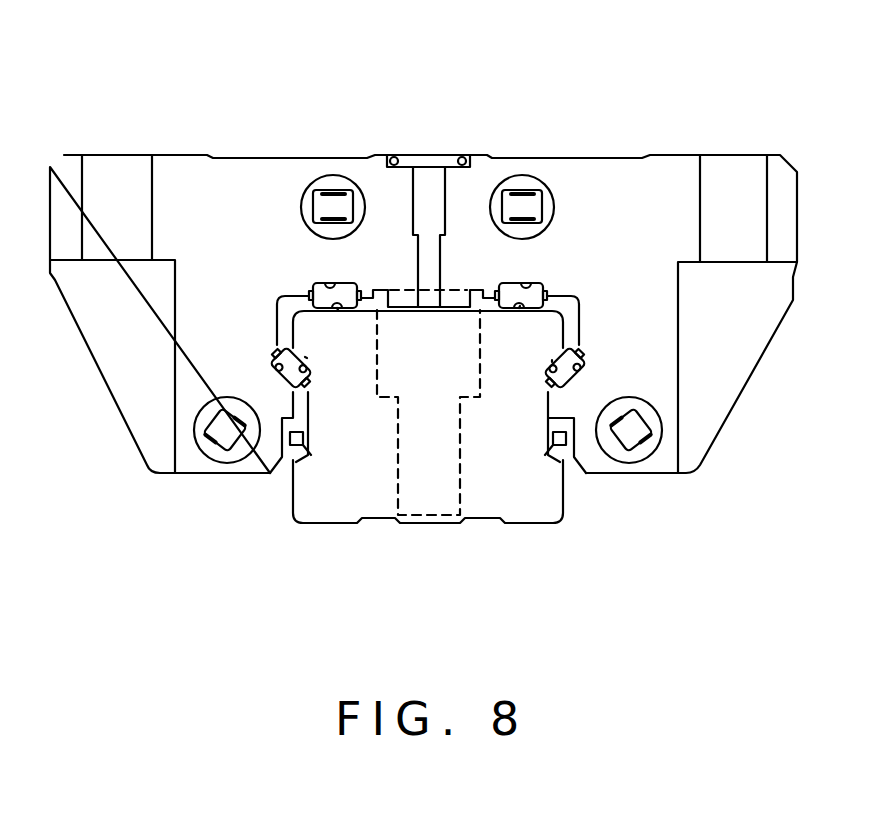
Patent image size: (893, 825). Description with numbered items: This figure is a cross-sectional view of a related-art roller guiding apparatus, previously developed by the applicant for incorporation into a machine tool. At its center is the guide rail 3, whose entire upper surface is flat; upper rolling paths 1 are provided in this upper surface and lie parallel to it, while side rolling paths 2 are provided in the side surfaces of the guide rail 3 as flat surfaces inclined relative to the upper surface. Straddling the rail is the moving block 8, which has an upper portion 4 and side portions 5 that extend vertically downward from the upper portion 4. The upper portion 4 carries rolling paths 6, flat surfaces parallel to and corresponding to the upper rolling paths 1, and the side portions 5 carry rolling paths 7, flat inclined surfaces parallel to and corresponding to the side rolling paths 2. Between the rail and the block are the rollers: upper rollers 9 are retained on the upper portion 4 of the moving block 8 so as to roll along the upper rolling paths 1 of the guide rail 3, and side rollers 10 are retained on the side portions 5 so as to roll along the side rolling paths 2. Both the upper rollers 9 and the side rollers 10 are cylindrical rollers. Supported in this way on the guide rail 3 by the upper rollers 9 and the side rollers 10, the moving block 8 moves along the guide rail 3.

The upper rolling paths 1 is at (338, 310).
The side rolling paths 2 is at (307, 358).
The guide rail 3 is at (517, 524).
The upper portion 4 is at (393, 218).
The side portions 5 is at (185, 367).
The rolling paths 6 is at (330, 285).
The rolling paths 7 is at (275, 370).
The moving block 8 is at (596, 160).
The upper rollers 9 is at (323, 198).
The side rollers 10 is at (236, 445).